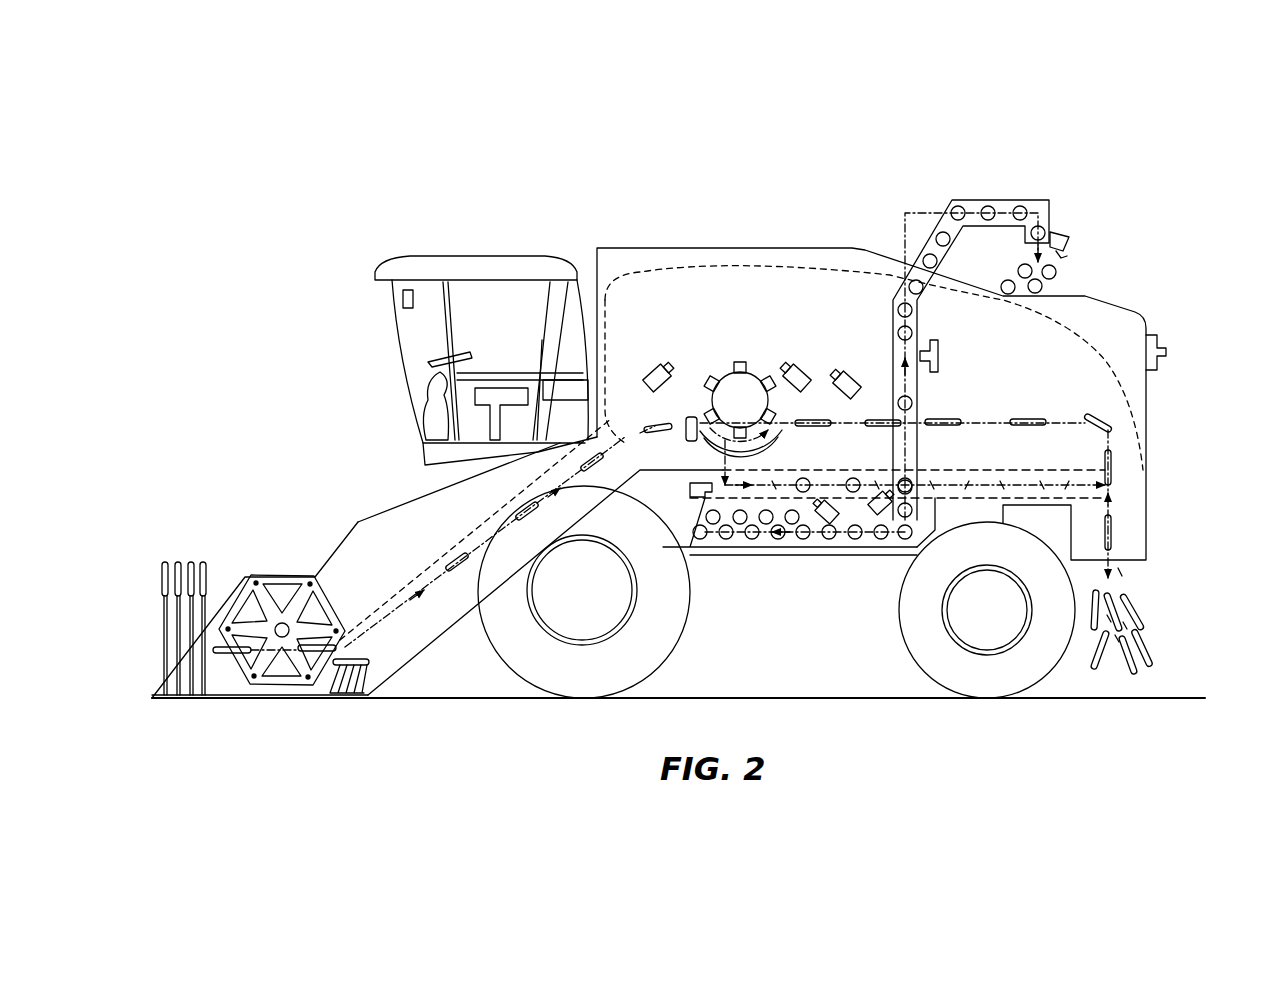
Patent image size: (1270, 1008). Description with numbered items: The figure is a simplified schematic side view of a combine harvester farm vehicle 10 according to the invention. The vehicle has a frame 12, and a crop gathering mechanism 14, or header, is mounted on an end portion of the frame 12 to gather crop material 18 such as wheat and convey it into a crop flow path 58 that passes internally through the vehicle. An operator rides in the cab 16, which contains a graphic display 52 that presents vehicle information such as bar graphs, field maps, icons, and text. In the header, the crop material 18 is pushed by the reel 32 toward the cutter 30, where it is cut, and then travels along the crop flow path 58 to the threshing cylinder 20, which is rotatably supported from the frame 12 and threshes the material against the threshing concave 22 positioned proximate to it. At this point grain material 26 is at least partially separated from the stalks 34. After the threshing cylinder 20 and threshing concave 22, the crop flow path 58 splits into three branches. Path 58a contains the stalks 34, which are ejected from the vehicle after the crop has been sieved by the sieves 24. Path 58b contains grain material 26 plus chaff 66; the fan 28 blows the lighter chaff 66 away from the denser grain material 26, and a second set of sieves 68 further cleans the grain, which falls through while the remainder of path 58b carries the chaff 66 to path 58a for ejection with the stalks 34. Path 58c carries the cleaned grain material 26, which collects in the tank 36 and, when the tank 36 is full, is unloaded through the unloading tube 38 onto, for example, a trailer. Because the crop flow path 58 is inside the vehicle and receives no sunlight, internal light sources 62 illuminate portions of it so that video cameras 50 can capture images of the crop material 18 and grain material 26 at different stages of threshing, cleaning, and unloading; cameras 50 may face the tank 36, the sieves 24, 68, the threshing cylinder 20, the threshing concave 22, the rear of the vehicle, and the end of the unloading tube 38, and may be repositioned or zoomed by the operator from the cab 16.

The farm vehicle 10 is at (282, 300).
The frame 12 is at (690, 248).
The crop gathering mechanism 14 is at (200, 680).
The cab 16 is at (480, 255).
The crop material 18 is at (165, 560).
The threshing cylinder 20 is at (740, 372).
The threshing concave 22 is at (720, 450).
The sieves 24 is at (905, 468).
The grain material 26 is at (1058, 272).
The fan 28 is at (688, 512).
The cutter 30 is at (345, 690).
The reel 32 is at (275, 683).
The stalks 34 is at (1100, 420).
The tank 36 is at (735, 552).
The unloading tube 38 is at (1002, 200).
The video camera 50 is at (1072, 246).
The graphic display 52 is at (410, 290).
The crop flow path 58 is at (370, 635).
The path 58a is at (1010, 423).
The path 58b is at (792, 540).
The path 58c is at (905, 545).
The internal light source 62 is at (648, 375).
The chaff 66 is at (832, 487).
The sieves 68 is at (705, 492).